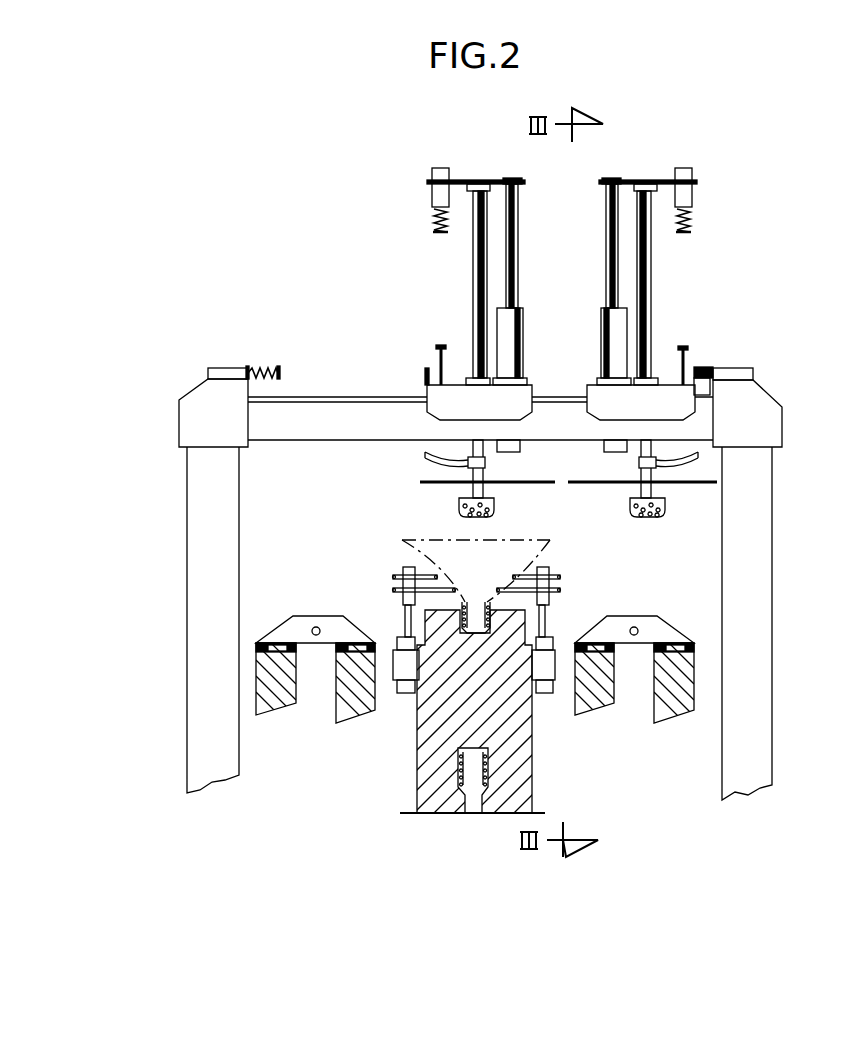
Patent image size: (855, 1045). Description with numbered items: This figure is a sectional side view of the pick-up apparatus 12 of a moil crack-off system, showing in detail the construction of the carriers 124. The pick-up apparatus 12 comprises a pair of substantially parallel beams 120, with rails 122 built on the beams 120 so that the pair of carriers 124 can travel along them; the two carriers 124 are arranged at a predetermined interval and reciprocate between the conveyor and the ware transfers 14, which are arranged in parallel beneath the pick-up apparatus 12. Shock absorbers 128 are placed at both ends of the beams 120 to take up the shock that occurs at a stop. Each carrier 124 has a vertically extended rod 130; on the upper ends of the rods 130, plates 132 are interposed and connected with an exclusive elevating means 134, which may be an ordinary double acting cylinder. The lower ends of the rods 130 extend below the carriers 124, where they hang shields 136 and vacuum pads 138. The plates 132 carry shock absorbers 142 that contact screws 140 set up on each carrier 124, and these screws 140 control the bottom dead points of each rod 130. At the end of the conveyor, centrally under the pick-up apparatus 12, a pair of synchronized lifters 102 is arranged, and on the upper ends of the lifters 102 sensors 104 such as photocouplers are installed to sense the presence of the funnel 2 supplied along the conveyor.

The funnel 2 is at (402, 547).
The pick-up apparatus 12 is at (172, 528).
The ware transfers 14 is at (250, 676).
The lifters 102 is at (405, 693).
The sensors 104 is at (400, 583).
The beams 120 is at (288, 410).
The rails 122 is at (347, 399).
The carriers 124 is at (440, 396).
The shock absorbers 128 is at (228, 368).
The rod 130 is at (473, 281).
The plates 132 is at (473, 180).
The elevating means 134 is at (612, 340).
The shields 136 is at (425, 481).
The vacuum pads 138 is at (459, 502).
The screws 140 is at (440, 382).
The shock absorbers 142 is at (431, 190).